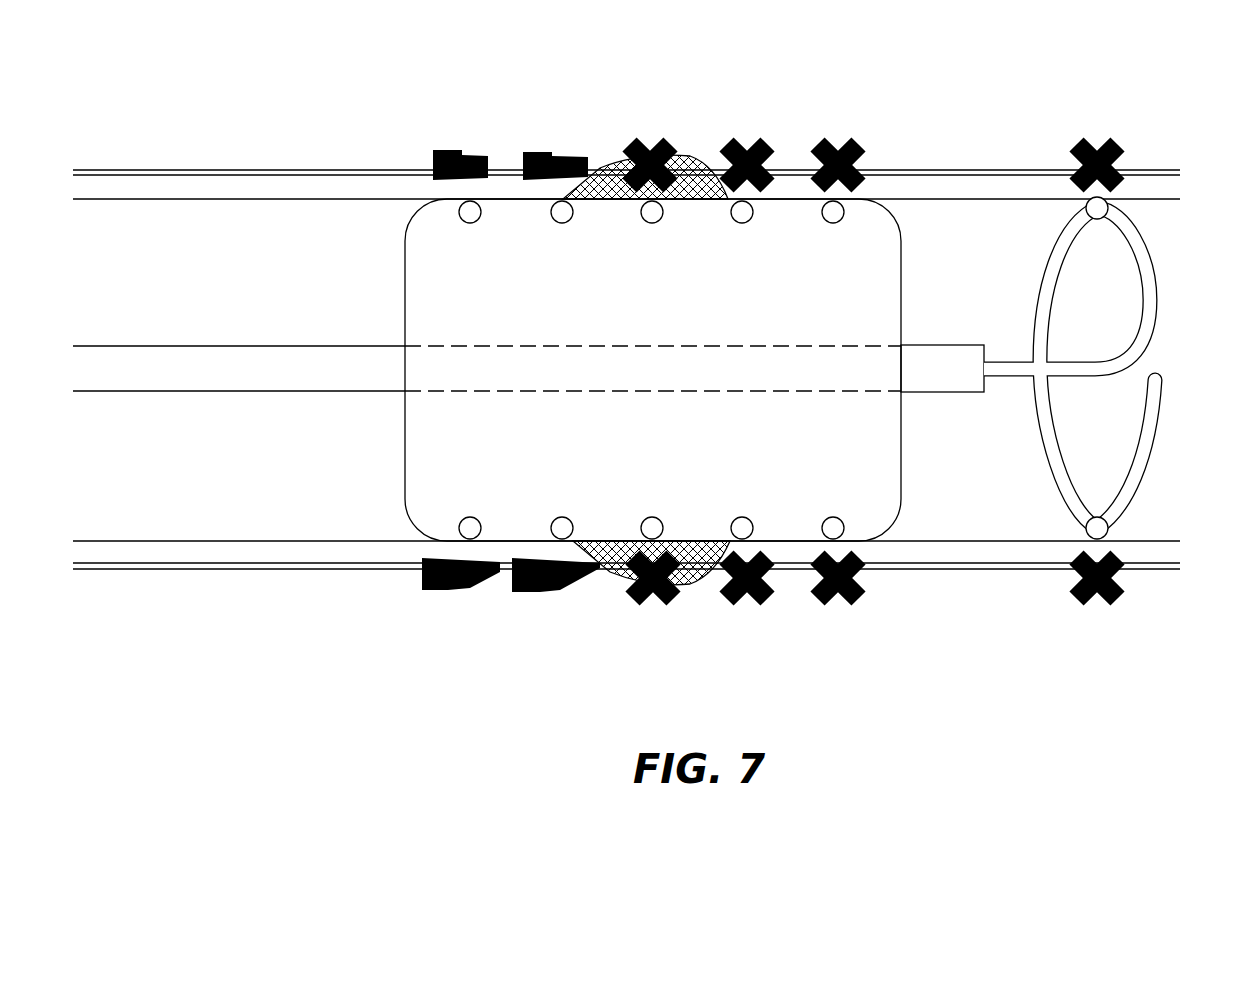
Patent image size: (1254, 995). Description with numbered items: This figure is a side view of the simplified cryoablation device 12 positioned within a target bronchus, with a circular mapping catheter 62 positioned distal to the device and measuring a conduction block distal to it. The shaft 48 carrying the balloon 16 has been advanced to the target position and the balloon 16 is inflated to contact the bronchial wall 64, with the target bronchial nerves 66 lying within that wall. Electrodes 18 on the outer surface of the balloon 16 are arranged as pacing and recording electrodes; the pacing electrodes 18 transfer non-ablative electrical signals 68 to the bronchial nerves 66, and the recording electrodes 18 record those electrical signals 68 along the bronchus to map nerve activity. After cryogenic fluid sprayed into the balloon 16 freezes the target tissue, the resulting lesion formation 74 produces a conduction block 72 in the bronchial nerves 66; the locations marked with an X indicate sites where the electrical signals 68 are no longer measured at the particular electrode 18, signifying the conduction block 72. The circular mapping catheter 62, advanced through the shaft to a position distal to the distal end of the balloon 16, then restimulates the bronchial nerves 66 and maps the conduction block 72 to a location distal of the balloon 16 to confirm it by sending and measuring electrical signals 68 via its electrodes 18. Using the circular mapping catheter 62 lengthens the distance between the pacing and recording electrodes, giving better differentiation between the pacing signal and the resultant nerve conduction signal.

The cryoablation device 12 is at (965, 395).
The balloon 16 is at (404, 290).
The electrodes 18 is at (462, 210).
The shaft 48 is at (161, 381).
The circular mapping catheter 62 is at (1152, 450).
The bronchial wall 64 is at (985, 197).
The bronchial nerves 66 is at (910, 168).
The electrical signals 68 is at (462, 150).
The conduction block 72 is at (653, 138).
The lesion formation 74 is at (698, 163).